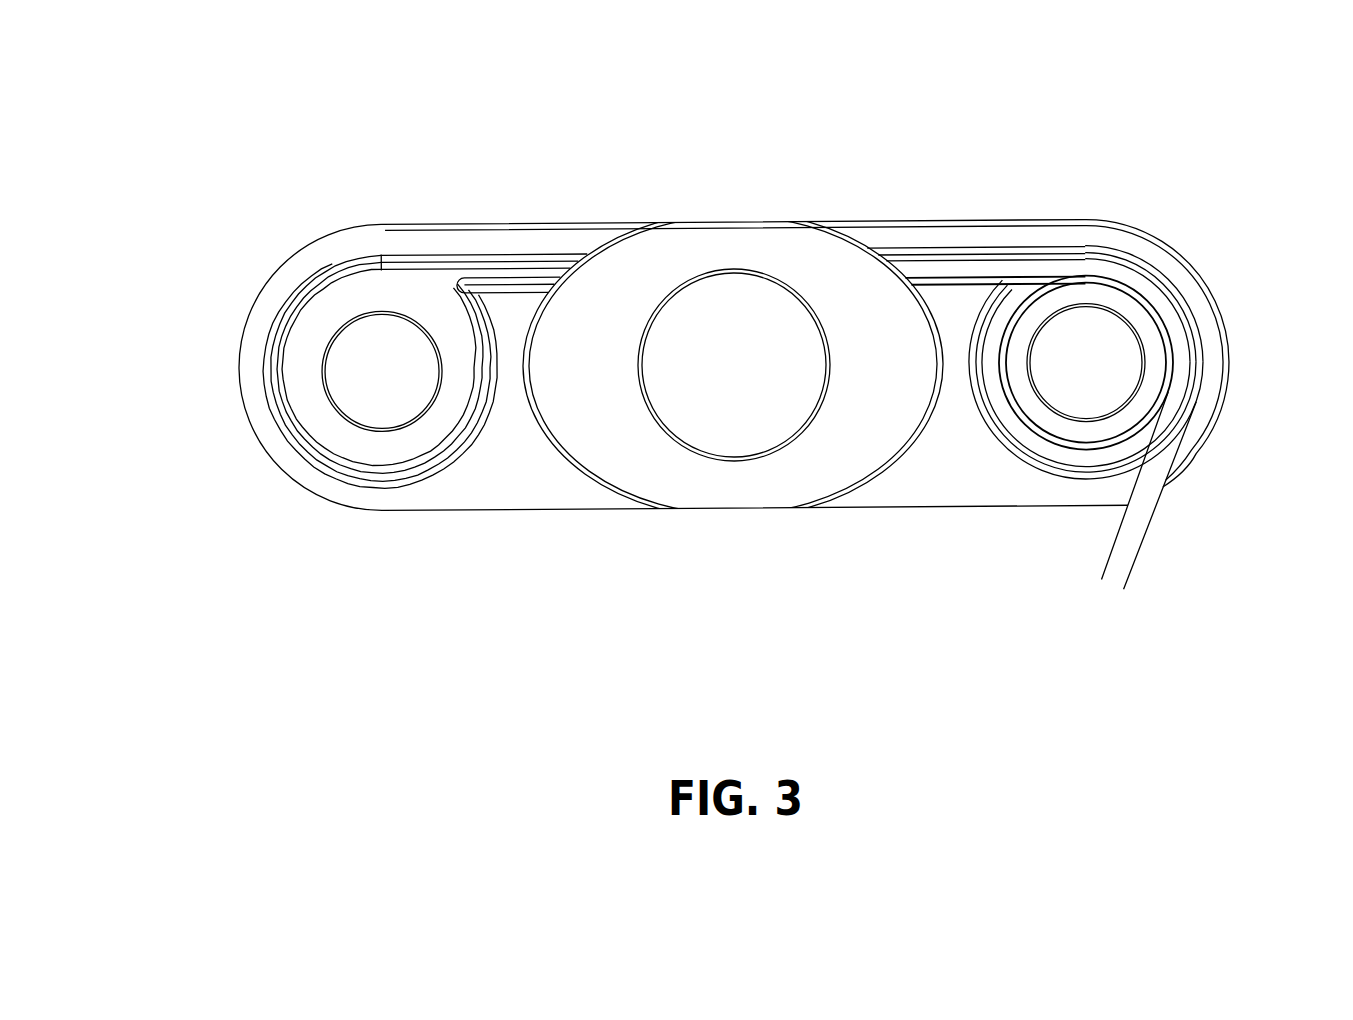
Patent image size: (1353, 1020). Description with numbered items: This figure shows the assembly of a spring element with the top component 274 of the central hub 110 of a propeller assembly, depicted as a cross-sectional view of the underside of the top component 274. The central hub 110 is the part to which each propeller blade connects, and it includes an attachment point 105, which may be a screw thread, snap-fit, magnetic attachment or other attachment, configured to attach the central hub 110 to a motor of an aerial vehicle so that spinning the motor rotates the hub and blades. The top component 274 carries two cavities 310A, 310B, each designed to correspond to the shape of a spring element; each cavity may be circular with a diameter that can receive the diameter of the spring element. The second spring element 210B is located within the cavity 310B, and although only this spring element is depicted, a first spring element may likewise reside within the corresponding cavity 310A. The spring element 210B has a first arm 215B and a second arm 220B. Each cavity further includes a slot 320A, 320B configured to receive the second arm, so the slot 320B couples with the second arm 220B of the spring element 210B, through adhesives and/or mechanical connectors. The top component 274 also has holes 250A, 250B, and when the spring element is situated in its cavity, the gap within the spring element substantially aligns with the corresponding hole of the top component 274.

The central hub 110 is at (267, 245).
The attachment point 105 is at (732, 397).
The hole 250A is at (355, 366).
The hole 250B is at (1100, 370).
The cavity 310A is at (427, 293).
The cavity 310B is at (1073, 253).
The slot 320A is at (510, 280).
The slot 320B is at (934, 265).
The second arm 220B is at (977, 265).
The second spring element 210B is at (1180, 362).
The first arm 215B is at (1123, 555).
The top component 274 is at (957, 452).